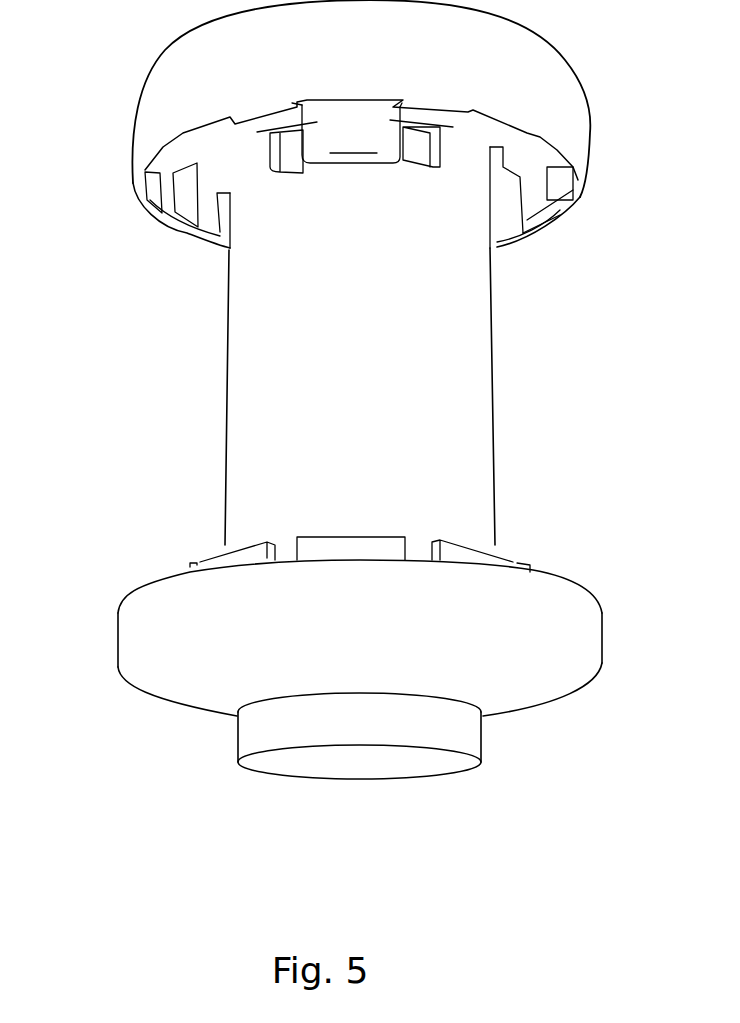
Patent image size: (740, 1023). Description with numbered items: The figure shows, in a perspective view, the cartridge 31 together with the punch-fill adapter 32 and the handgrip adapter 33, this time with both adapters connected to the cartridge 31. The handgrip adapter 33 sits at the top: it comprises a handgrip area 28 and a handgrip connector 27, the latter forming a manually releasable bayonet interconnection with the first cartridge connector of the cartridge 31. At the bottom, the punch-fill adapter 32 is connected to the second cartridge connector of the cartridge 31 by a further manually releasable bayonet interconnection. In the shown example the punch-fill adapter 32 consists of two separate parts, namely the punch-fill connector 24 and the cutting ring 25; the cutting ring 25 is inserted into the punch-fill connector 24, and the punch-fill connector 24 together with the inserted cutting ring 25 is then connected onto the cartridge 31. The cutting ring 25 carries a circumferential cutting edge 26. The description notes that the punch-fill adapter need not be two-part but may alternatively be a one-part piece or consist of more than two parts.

The punch-fill connector 24 is at (620, 642).
The cutting ring 25 is at (503, 740).
The circumferential cutting edge 26 is at (360, 779).
The handgrip connector 27 is at (553, 247).
The handgrip area 28 is at (518, 60).
The cartridge 31 is at (216, 393).
The punch-fill adapter 32 is at (91, 568).
The handgrip adapter 33 is at (91, 57).